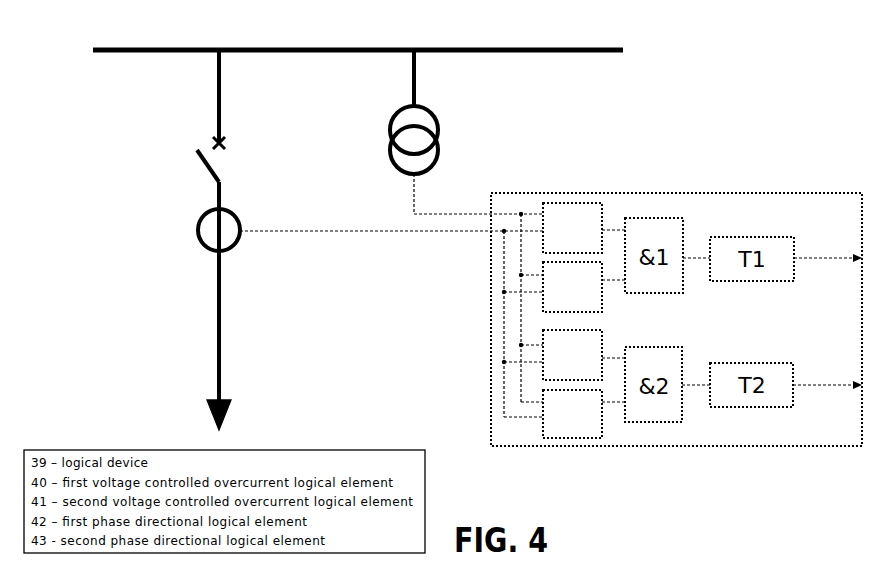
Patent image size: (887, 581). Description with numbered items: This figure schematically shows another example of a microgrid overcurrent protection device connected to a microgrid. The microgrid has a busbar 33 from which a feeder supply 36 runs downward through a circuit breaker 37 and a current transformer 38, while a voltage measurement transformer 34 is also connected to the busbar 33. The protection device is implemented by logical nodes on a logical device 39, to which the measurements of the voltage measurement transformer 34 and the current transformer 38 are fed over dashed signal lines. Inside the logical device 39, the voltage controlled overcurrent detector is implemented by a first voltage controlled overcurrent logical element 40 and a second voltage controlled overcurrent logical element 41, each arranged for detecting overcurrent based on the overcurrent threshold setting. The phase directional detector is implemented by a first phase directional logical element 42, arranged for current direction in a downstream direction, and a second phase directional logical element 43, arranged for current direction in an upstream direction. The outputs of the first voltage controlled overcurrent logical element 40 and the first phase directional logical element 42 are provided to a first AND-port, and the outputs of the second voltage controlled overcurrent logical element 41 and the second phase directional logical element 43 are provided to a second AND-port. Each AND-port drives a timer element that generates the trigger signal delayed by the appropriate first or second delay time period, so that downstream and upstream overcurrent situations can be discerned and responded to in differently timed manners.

The busbar 33 is at (373, 31).
The voltage measurement transformer 34 is at (397, 125).
The feeder supply 36 is at (200, 97).
The circuit breaker 37 is at (189, 168).
The current transformer 38 is at (200, 245).
The logical device 39 is at (676, 319).
The first voltage controlled overcurrent logical element 40 is at (572, 228).
The second voltage controlled overcurrent logical element 41 is at (572, 355).
The first phase directional logical element 42 is at (572, 287).
The second phase directional logical element 43 is at (572, 414).